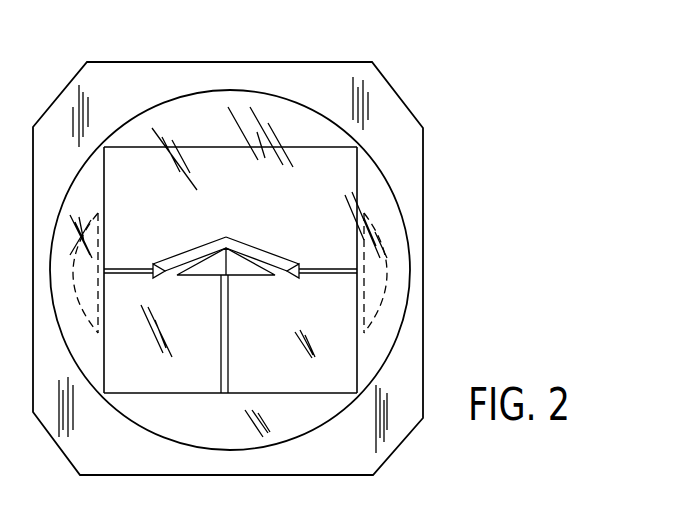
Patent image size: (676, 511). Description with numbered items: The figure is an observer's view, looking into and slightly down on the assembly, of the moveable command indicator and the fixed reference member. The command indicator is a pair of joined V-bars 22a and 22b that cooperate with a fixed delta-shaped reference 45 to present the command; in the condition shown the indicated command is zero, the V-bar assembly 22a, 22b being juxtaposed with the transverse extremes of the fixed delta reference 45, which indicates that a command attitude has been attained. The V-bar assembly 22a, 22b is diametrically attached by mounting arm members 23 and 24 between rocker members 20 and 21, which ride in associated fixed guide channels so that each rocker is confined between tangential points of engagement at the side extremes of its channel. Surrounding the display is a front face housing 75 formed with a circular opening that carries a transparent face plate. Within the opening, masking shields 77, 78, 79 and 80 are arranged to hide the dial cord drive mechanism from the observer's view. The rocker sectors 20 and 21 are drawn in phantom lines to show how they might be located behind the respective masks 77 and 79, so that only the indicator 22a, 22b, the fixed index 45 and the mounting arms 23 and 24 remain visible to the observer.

The front face housing 75 is at (302, 74).
The masking shield 77 is at (97, 177).
The masking shield 78 is at (216, 131).
The masking shield 79 is at (364, 353).
The masking shield 80 is at (249, 400).
The rocker member 20 is at (96, 214).
The rocker member 21 is at (369, 253).
The V-bar 22a is at (194, 248).
The V-bar 22b is at (271, 252).
The mounting arm member 23 is at (122, 268).
The mounting arm member 24 is at (311, 274).
The fixed delta-shaped reference 45 is at (236, 279).